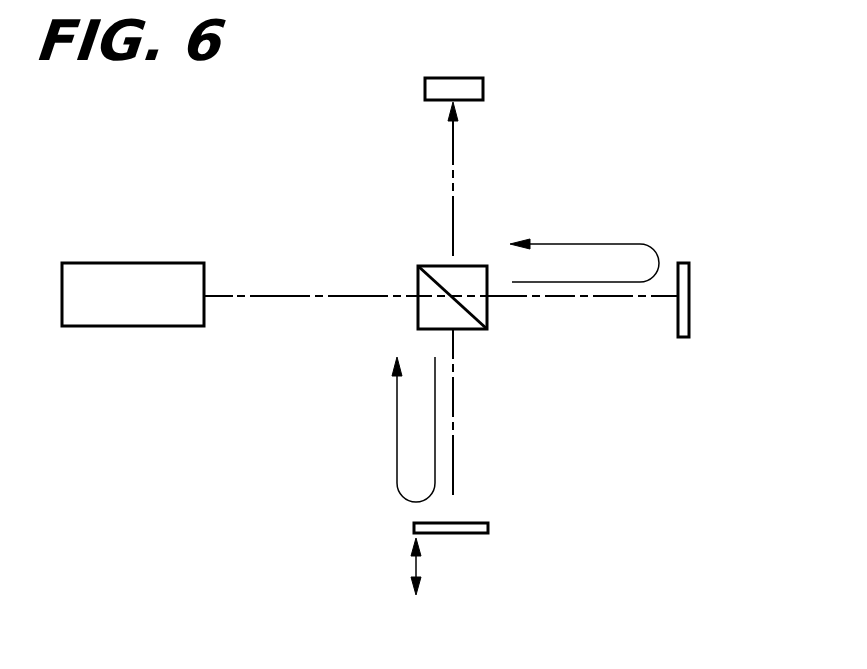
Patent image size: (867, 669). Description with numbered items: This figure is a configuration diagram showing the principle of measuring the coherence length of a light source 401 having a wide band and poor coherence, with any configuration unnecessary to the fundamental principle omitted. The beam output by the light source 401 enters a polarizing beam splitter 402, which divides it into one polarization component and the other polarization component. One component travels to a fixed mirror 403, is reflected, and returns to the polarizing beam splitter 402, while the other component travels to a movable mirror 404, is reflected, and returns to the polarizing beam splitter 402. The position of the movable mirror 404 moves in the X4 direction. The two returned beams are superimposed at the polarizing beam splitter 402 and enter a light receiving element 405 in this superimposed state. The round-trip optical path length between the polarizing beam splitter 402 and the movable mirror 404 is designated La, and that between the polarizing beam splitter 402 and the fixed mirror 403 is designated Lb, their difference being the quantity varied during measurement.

The light source 401 is at (123, 326).
The polarizing beam splitter 402 is at (482, 310).
The fixed mirror 403 is at (685, 280).
The movable mirror 404 is at (490, 528).
The light receiving element 405 is at (445, 83).
The optical path length between polarizing beam splitter and movable mirror La is at (397, 408).
The optical path length between polarizing beam splitter and fixed mirror Lb is at (583, 243).
The movement direction of movable mirror X4 is at (413, 563).